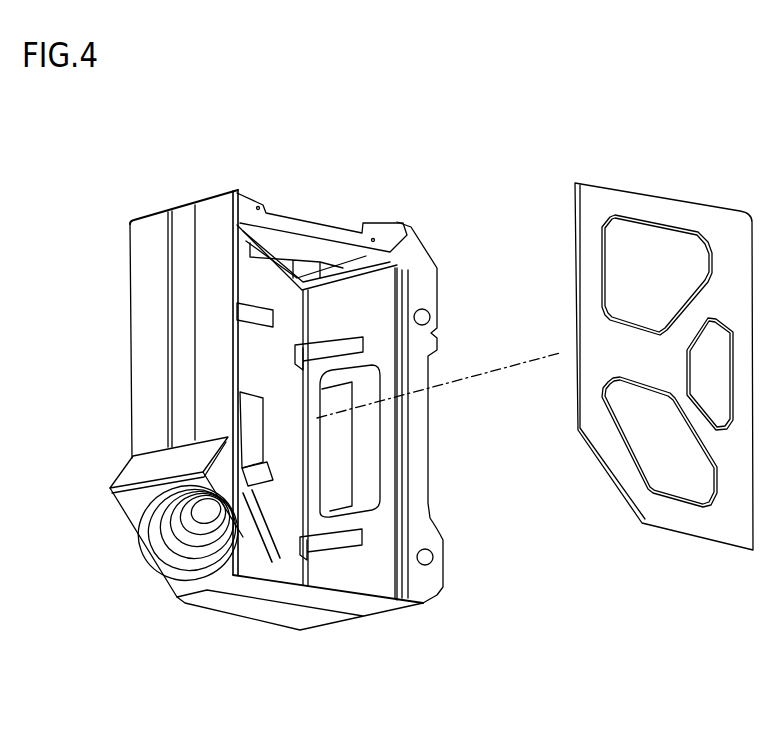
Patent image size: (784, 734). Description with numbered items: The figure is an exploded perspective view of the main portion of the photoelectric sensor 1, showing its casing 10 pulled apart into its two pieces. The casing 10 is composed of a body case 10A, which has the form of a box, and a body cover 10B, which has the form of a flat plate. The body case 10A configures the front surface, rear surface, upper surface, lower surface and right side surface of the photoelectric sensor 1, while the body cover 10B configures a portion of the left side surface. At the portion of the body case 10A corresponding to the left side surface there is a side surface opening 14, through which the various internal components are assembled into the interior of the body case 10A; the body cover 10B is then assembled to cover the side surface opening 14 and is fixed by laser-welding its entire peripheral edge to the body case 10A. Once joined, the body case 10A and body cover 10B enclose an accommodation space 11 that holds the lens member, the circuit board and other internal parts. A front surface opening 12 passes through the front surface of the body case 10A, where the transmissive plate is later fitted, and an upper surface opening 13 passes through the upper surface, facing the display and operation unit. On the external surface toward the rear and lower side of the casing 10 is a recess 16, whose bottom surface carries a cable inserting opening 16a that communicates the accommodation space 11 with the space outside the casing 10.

The photoelectric sensor 1 is at (87, 107).
The casing 10 is at (620, 110).
The body case 10A is at (420, 262).
The body cover 10B is at (590, 206).
The accommodation space 11 is at (363, 323).
The front surface opening 12 is at (337, 470).
The upper surface opening 13 is at (270, 270).
The side surface opening 14 is at (256, 363).
The recess 16 is at (150, 527).
The cable inserting opening 16a is at (199, 535).